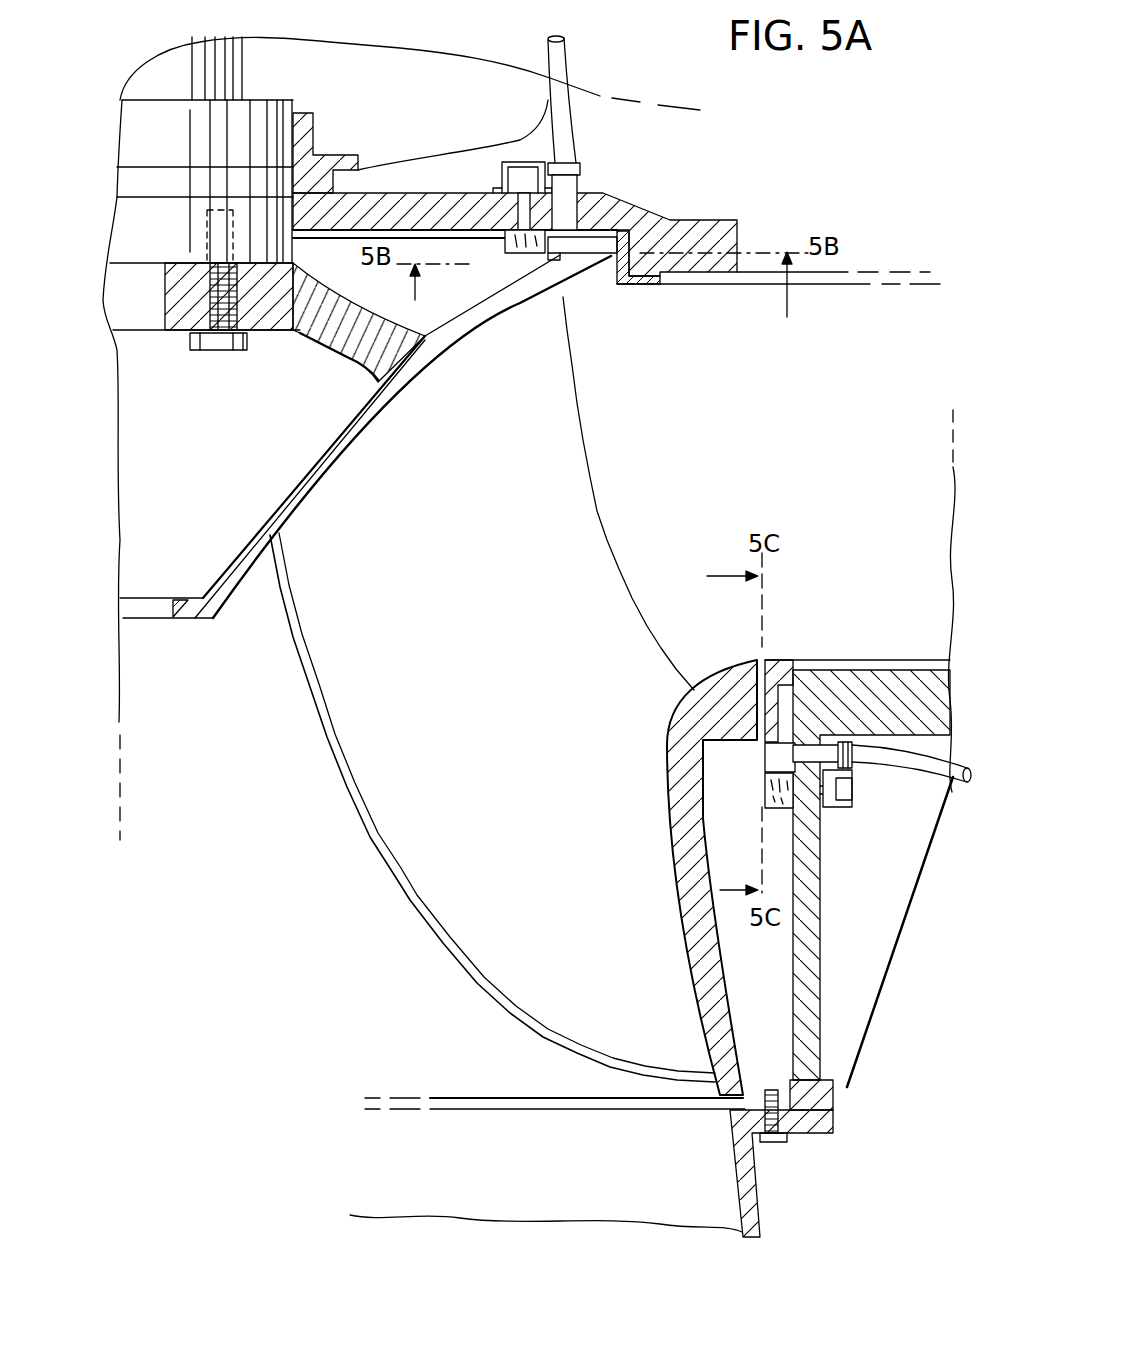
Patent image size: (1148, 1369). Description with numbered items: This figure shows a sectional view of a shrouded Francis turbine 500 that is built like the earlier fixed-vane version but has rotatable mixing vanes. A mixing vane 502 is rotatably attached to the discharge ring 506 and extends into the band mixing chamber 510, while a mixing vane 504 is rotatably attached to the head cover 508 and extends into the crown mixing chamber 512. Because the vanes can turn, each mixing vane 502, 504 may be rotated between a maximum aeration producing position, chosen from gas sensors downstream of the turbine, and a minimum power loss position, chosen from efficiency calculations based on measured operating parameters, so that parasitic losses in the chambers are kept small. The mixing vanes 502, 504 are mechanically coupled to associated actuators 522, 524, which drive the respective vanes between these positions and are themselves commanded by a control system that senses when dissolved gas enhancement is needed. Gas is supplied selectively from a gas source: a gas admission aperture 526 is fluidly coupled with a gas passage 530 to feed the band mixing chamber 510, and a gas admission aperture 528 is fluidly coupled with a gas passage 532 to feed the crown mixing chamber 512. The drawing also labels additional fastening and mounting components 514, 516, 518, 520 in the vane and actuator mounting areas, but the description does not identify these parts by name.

The shrouded turbine 500 is at (710, 164).
The mixing vane 502 is at (705, 788).
The mixing vane 504 is at (510, 254).
The discharge ring 506 is at (820, 968).
The head cover 508 is at (613, 192).
The band mixing chamber 510 is at (777, 975).
The crown mixing chamber 512 is at (333, 263).
The nut 514 is at (765, 800).
The bolt 516 is at (765, 778).
The nut 518 is at (505, 254).
The bolt 520 is at (542, 254).
The actuator 522 is at (855, 800).
The actuator 524 is at (523, 160).
The gas admission aperture 526 is at (763, 742).
The gas admission aperture 528 is at (586, 286).
The gas passage 530 is at (958, 785).
The gas passage 532 is at (567, 75).